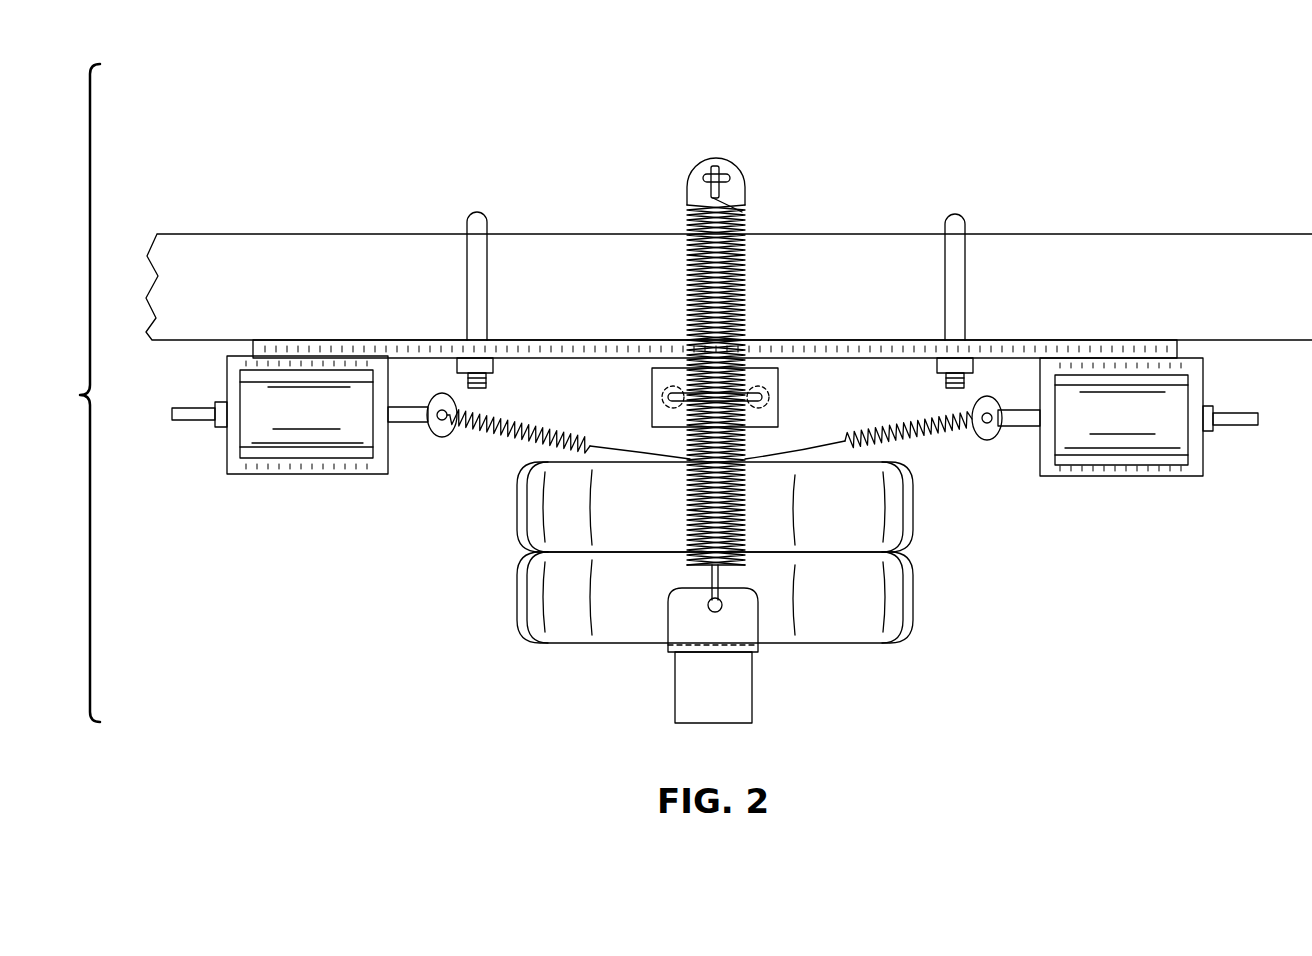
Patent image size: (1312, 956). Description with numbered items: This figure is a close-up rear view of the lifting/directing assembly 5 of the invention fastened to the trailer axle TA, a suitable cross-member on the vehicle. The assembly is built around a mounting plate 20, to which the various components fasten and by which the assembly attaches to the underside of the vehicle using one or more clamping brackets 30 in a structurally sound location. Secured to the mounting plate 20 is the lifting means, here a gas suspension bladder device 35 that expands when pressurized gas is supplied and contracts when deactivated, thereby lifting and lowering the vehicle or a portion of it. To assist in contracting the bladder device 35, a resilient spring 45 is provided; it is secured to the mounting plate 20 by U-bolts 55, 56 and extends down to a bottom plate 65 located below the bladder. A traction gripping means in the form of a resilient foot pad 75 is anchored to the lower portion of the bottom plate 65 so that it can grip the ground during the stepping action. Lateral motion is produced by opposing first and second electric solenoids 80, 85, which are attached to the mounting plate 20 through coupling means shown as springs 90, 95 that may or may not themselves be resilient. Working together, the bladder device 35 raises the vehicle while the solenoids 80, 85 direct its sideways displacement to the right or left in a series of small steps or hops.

The lifting/directing assembly 5 is at (79, 393).
The trailer axle TA is at (1205, 252).
The clamping brackets 30 is at (477, 213).
The spring 45 is at (745, 215).
The U-bolt 56 is at (702, 182).
The mounting plate 20 is at (775, 418).
The U-bolt 55 is at (668, 397).
The electric solenoid 80 is at (285, 440).
The electric solenoid 85 is at (1100, 440).
The spring 90 is at (495, 448).
The spring 95 is at (925, 448).
The gas suspension bladder device 35 is at (530, 607).
The bottom plate 65 is at (748, 628).
The resilient foot pad 75 is at (685, 680).